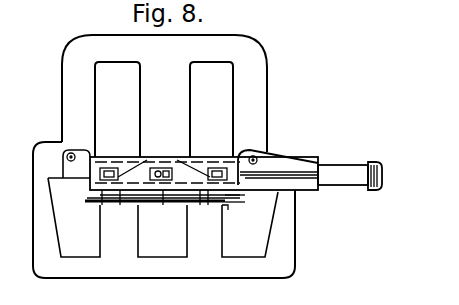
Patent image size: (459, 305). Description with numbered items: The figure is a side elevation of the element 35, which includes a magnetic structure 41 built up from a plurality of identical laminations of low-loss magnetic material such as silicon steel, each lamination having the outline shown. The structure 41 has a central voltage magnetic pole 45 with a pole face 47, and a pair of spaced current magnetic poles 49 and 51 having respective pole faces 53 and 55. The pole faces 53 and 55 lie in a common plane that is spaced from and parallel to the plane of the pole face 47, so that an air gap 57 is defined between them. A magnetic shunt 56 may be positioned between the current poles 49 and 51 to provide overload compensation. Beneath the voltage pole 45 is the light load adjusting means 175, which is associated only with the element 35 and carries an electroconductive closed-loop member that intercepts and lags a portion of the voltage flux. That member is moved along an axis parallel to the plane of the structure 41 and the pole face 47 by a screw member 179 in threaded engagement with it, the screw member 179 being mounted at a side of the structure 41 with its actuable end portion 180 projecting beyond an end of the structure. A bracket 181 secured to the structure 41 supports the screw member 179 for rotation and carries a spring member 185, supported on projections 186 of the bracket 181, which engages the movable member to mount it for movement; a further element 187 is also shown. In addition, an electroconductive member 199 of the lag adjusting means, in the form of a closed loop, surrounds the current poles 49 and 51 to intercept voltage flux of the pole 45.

The element 35 is at (328, 106).
The magnetic structure 41 is at (269, 82).
The voltage magnetic pole 45 is at (191, 97).
The pole face 47 is at (160, 191).
The current magnetic pole 49 is at (106, 216).
The current magnetic pole 51 is at (222, 232).
The pole face 53 is at (118, 192).
The pole face 55 is at (212, 195).
The magnetic shunt 56 is at (170, 196).
The air gap 57 is at (243, 195).
The adjusting means 175 is at (338, 156).
The screw member 179 is at (297, 178).
The actuable end portion 180 is at (362, 164).
The bracket 181 is at (278, 152).
The spring member 185 is at (210, 166).
The projections 186 is at (180, 160).
The clip 187 is at (112, 166).
The electroconductive member 199 is at (230, 202).